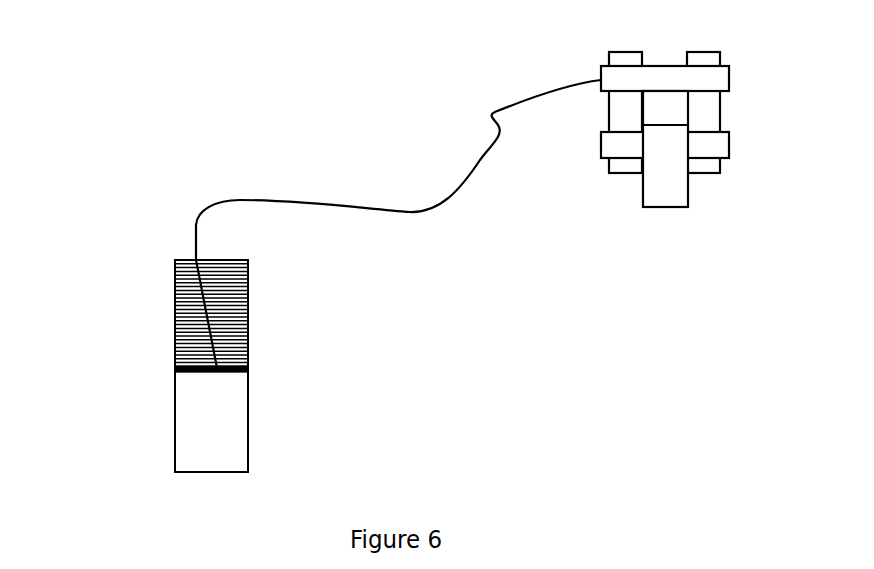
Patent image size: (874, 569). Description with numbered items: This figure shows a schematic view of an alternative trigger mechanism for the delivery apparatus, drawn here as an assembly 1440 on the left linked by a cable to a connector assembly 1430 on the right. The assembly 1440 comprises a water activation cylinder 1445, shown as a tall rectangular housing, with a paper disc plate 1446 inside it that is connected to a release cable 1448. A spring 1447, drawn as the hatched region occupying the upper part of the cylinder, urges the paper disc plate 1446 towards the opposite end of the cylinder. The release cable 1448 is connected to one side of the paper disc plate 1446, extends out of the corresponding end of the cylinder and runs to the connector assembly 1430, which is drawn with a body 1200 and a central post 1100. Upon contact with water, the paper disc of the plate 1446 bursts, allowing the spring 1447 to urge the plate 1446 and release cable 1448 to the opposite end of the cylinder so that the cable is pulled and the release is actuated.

The probe assembly 1440 is at (119, 251).
The water activation cylinder 1445 is at (270, 435).
The paper disc plate 1446 is at (195, 373).
The spring 1447 is at (229, 321).
The release cable 1448 is at (389, 232).
The connector assembly 1430 is at (576, 58).
The connector 1200 is at (592, 175).
The central post 1100 is at (669, 228).